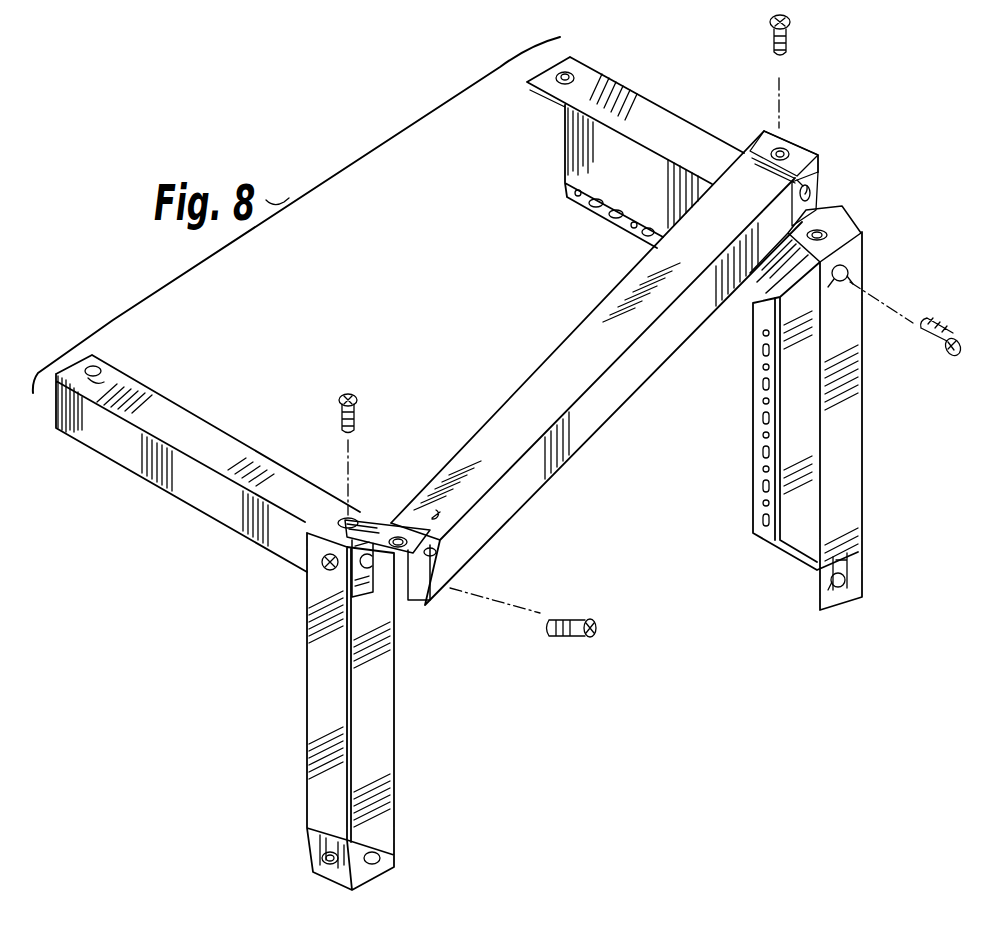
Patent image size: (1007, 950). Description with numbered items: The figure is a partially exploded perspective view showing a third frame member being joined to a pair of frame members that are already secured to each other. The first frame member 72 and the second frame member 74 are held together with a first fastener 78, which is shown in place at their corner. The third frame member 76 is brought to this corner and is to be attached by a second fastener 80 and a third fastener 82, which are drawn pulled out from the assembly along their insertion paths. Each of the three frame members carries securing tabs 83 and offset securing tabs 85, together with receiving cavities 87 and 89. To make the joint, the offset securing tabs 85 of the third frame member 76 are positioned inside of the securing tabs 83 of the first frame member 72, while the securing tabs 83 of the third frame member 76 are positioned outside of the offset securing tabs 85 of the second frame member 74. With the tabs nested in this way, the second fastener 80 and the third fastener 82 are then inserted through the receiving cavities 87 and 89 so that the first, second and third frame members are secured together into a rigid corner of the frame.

The first frame member 72 is at (113, 445).
The second frame member 74 is at (662, 126).
The third frame member 76 is at (592, 325).
The first fastener 78 is at (322, 573).
The second fastener 80 is at (358, 395).
The third fastener 82 is at (790, 23).
The securing tab 83 is at (797, 148).
The offset securing tab 85 is at (807, 197).
The receiving cavity 87 is at (780, 158).
The receiving cavity 89 is at (810, 182).